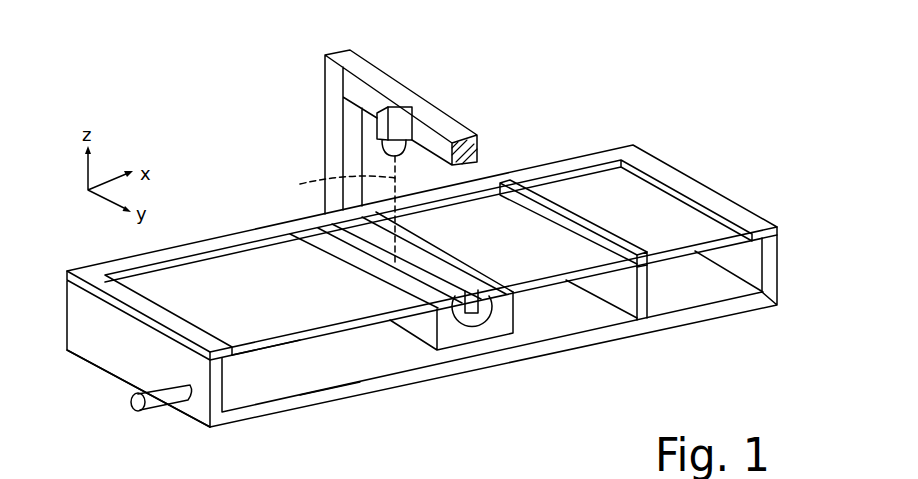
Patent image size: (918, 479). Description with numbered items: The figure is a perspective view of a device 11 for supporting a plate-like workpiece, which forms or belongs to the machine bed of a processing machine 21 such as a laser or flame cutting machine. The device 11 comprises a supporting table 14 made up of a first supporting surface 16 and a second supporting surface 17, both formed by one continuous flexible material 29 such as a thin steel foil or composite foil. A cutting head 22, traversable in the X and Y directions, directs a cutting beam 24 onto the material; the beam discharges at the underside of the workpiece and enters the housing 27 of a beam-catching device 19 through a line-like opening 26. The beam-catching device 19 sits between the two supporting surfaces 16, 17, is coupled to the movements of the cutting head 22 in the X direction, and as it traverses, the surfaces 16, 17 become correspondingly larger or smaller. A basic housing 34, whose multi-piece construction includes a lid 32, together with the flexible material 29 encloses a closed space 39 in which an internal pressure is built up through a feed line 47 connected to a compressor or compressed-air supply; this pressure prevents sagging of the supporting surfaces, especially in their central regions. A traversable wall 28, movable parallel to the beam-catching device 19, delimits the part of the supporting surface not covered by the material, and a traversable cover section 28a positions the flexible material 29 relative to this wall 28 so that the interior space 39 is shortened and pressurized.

The device 11 is at (718, 180).
The supporting table 14 is at (293, 355).
The first supporting surface 16 is at (587, 188).
The second supporting surface 17 is at (200, 275).
The beam-catching device 19 is at (462, 333).
The processing machine 21 is at (293, 106).
The cutting head 22 is at (406, 122).
The cutting beam 24 is at (336, 209).
The line-like opening 26 is at (483, 300).
The housing 27 is at (480, 312).
The traversable wall 28 is at (643, 298).
The traversable cover section 28a is at (651, 265).
The flexible material 29 is at (315, 345).
The lid 32 is at (117, 254).
The basic housing 34 is at (100, 386).
The closed space 39 is at (382, 366).
The feed line 47 is at (158, 404).